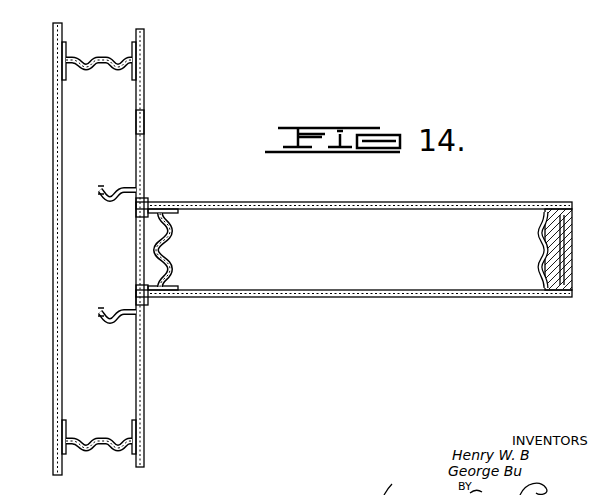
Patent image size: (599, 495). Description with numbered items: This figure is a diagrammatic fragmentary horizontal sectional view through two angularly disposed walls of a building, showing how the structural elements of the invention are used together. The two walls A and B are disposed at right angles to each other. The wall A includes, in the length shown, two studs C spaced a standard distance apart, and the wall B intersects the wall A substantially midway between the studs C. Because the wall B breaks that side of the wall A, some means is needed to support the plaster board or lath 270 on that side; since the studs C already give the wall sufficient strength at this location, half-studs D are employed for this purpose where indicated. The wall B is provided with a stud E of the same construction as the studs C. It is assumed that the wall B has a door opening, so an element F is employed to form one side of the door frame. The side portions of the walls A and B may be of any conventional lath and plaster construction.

The wall A is at (52, 167).
The wall B is at (272, 297).
The stud C is at (100, 65).
The half-stud D is at (107, 199).
The stud E is at (168, 250).
The door frame element F is at (503, 263).
The plaster board or lath 270 is at (145, 126).